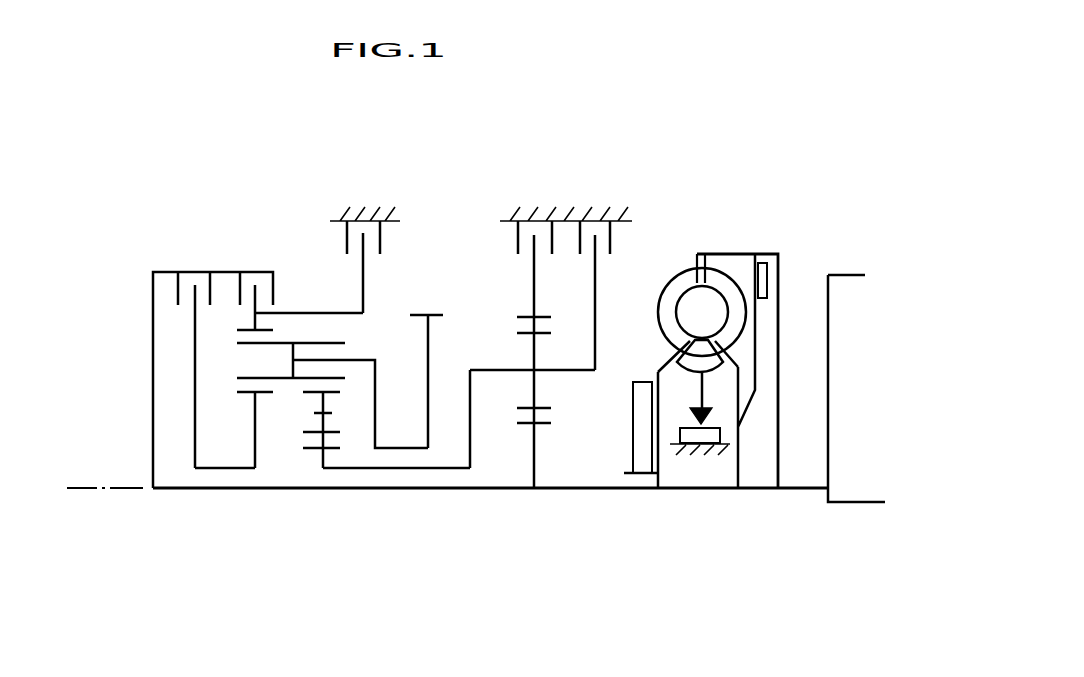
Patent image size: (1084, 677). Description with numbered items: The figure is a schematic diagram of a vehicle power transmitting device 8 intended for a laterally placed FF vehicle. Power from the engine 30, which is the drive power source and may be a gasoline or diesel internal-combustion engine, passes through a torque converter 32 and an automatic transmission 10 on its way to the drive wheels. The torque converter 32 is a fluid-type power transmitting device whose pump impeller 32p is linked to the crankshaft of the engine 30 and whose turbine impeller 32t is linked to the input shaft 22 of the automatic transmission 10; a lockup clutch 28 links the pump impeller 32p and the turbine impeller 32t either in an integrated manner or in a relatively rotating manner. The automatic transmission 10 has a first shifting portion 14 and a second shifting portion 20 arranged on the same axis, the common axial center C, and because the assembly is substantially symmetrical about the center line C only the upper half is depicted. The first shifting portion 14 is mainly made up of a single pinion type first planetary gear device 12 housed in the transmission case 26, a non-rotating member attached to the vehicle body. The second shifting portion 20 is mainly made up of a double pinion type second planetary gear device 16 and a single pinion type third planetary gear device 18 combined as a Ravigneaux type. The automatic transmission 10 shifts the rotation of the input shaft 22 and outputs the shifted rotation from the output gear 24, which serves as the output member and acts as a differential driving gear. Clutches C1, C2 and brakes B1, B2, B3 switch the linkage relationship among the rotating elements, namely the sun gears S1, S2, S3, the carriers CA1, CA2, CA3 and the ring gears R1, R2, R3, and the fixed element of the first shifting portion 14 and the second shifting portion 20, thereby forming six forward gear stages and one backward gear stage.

The vehicle power transmitting device 8 is at (790, 114).
The automatic transmission 10 is at (237, 169).
The first planetary gear device 12 is at (560, 409).
The first shifting portion 14 is at (622, 509).
The second planetary gear device 16 is at (306, 485).
The third planetary gear device 18 is at (270, 457).
The second shifting portion 20 is at (191, 514).
The input shaft 22 is at (699, 492).
The output gear 24 is at (440, 313).
The transmission case 26 is at (367, 216).
The lockup clutch 28 is at (790, 273).
The engine 30 is at (848, 285).
The torque converter 32 is at (694, 306).
The pump impeller 32p is at (665, 318).
The turbine impeller 32t is at (730, 286).
The axial center C is at (120, 486).
The clutch C1 is at (185, 356).
The clutch C2 is at (241, 287).
The brake B1 is at (612, 237).
The brake B2 is at (379, 267).
The brake B3 is at (515, 237).
The ring gear R1 is at (523, 314).
The ring gear R2 is at (211, 330).
The ring gear R3 is at (250, 327).
The sun gear S1 is at (540, 424).
The sun gear S2 is at (312, 452).
The sun gear S3 is at (248, 395).
The carrier CA1 is at (568, 372).
The carrier CA2 is at (390, 359).
The carrier CA3 is at (390, 359).